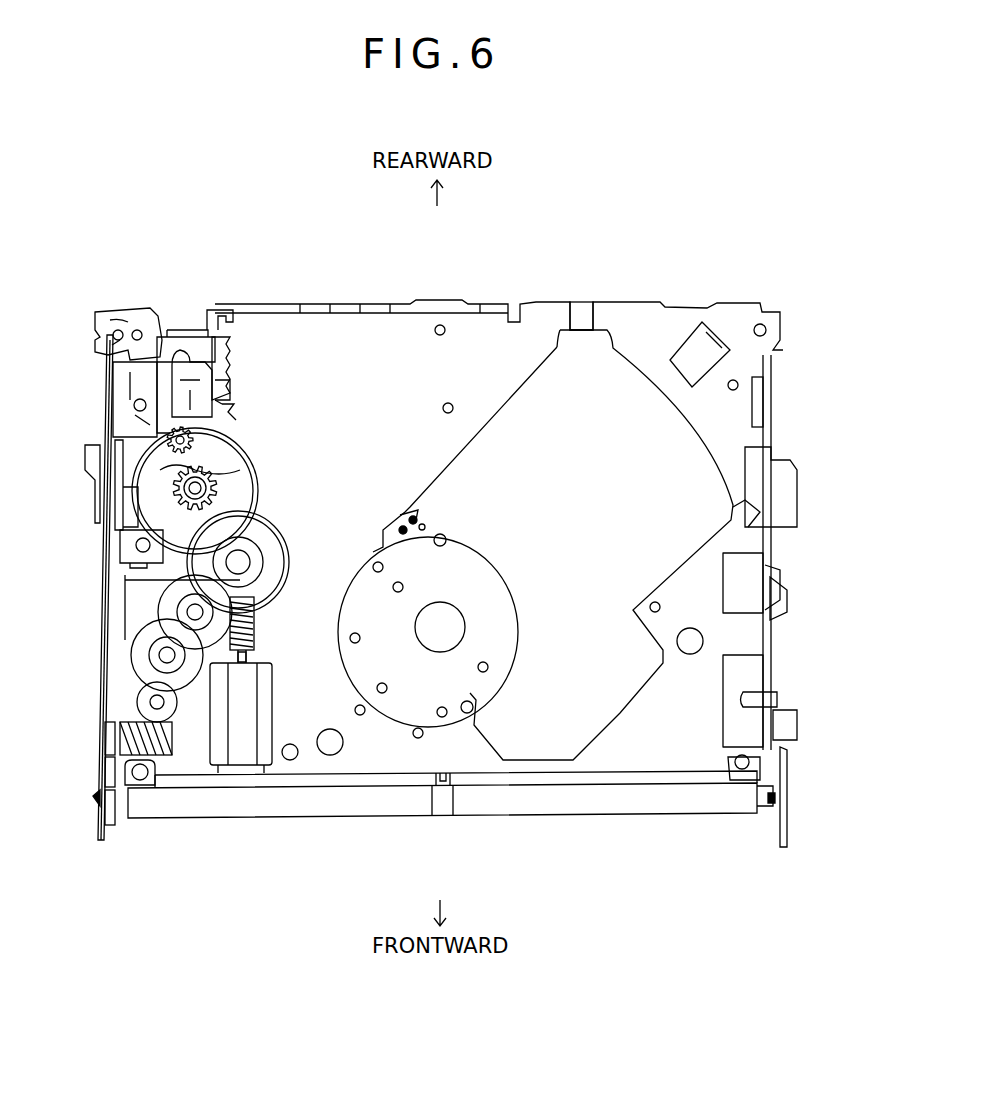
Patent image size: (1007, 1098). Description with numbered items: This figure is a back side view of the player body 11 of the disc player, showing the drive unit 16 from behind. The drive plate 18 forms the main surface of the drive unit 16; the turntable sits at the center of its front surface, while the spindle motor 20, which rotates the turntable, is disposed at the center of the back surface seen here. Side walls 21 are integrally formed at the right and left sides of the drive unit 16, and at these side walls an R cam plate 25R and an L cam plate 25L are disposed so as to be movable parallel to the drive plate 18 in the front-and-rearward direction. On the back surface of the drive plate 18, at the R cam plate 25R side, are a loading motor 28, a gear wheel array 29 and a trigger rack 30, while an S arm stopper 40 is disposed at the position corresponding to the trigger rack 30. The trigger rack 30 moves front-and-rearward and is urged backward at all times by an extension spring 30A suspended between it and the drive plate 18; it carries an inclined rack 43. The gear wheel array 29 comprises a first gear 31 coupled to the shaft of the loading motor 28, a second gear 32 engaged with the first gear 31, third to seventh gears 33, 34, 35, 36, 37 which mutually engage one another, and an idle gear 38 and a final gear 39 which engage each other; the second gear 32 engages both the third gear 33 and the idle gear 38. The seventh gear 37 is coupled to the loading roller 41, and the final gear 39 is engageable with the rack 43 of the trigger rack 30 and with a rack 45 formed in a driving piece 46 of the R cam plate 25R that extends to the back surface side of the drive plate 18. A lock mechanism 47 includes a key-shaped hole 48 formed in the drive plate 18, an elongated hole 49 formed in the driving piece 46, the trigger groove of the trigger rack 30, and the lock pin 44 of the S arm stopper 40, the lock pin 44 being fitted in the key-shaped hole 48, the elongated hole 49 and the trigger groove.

The player body 11 is at (627, 275).
The drive unit 16 is at (562, 298).
The drive plate 18 is at (466, 330).
The spindle motor 20 is at (452, 565).
The side walls 21 is at (110, 563).
The L cam plate 25L is at (776, 513).
The R cam plate 25R is at (97, 833).
The loading motor 28 is at (237, 753).
The gear wheel array 29 is at (295, 555).
The trigger rack 30 is at (187, 337).
The extension spring 30A is at (228, 380).
The first gear 31 is at (255, 620).
The second gear 32 is at (140, 587).
The third gear 33 is at (133, 635).
The fourth gear 34 is at (130, 683).
The fifth gear 35 is at (110, 727).
The sixth gear 36 is at (110, 763).
The seventh gear 37 is at (110, 793).
The idle gear 38 is at (270, 533).
The final gear 39 is at (237, 447).
The S arm stopper 40 is at (153, 313).
The loading roller 41 is at (492, 815).
The rack 43 is at (235, 455).
The rack 45 is at (200, 469).
The lock pin 44 is at (228, 345).
The driving piece 46 is at (157, 330).
The lock mechanism 47 is at (233, 306).
The key-shaped hole 48 is at (210, 427).
The elongated hole 49 is at (232, 377).